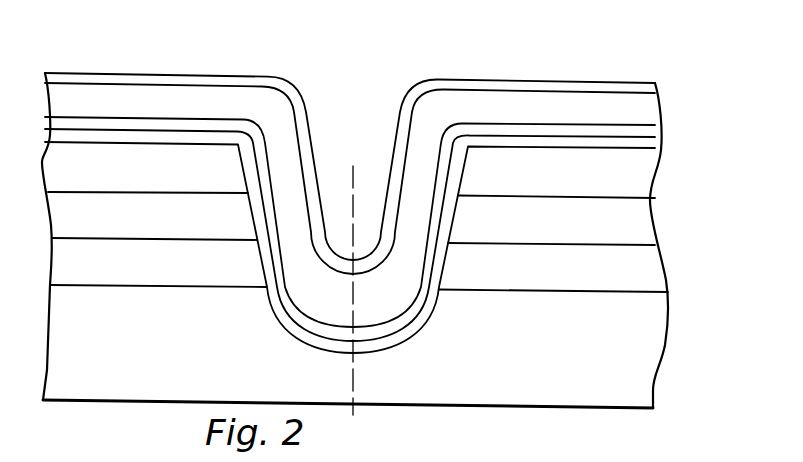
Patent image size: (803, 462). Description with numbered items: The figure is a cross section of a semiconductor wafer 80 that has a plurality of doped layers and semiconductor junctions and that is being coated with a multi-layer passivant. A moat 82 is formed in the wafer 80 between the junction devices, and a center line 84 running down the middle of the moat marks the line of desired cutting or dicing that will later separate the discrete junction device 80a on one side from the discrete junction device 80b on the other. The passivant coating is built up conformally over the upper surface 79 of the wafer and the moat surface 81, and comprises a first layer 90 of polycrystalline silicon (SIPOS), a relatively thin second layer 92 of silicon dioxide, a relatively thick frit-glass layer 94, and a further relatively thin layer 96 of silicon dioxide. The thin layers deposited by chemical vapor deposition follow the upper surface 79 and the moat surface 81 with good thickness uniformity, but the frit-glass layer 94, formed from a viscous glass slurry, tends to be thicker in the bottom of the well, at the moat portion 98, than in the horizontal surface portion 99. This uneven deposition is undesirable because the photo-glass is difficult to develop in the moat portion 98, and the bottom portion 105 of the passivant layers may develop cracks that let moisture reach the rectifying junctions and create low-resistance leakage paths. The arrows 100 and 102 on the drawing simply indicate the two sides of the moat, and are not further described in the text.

The upper surface 79 is at (146, 142).
The wafer 80 is at (533, 55).
The discrete junction device 80a is at (160, 352).
The discrete junction device 80b is at (553, 358).
The moat surface 81 is at (279, 309).
The moat 82 is at (357, 133).
The center line 84 is at (353, 166).
The first layer of polycrystalline silicon (SIPOS) 90 is at (657, 156).
The second layer of silicon dioxide 92 is at (657, 133).
The frit-glass layer 94 is at (651, 113).
The layer of silicon dioxide 96 is at (596, 83).
The moat portion 98 is at (387, 305).
The horizontal surface portion 99 is at (120, 115).
The left trench sidewall 100 is at (291, 75).
The right trench sidewall 102 is at (417, 75).
The bottom portion of the passivant layers 105 is at (363, 257).